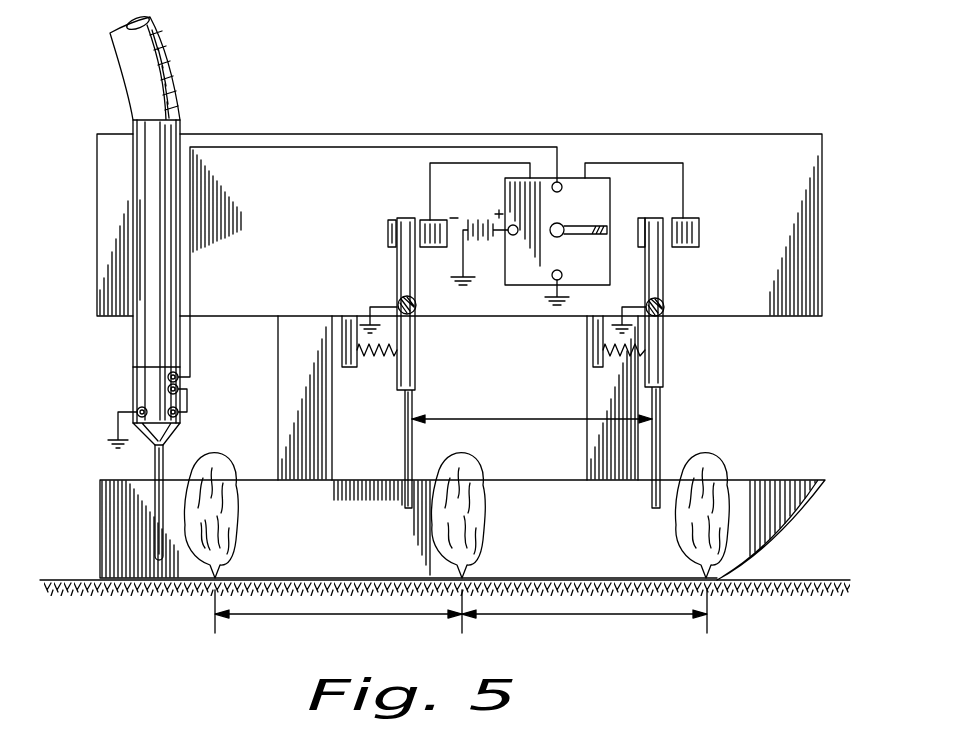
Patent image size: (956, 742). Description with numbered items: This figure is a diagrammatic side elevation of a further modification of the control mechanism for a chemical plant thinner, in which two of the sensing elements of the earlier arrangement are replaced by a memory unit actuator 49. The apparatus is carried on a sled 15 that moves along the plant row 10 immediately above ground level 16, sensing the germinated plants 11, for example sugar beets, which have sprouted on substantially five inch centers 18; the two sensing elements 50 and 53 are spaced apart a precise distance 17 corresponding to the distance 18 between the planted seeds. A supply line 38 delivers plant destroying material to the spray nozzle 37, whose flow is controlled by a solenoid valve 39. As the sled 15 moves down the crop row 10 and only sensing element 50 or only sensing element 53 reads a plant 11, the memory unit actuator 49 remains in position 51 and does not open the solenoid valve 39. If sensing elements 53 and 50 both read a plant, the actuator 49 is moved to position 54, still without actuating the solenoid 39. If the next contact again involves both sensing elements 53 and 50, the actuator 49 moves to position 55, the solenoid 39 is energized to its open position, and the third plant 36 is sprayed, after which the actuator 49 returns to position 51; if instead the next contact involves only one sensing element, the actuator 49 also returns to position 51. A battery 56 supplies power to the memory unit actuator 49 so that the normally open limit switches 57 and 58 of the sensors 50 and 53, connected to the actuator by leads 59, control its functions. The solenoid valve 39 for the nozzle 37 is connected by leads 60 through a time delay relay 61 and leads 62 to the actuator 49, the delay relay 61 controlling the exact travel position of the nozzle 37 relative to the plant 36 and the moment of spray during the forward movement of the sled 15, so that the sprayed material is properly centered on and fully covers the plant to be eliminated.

The plant row 10 is at (800, 580).
The plants 11 is at (742, 460).
The sled 15 is at (800, 133).
The ground level 16 is at (78, 580).
The distance between sensing elements 17 is at (558, 420).
The distance between planted seeds 18 is at (585, 628).
The third plant 36 is at (238, 532).
The spray nozzle 37 is at (155, 469).
The supply line 38 is at (177, 83).
The solenoid valve 39 is at (178, 426).
The memory unit actuator 49 is at (600, 286).
The sensing element 50 is at (661, 446).
The first position 51 is at (562, 190).
The sensing element 53 is at (413, 446).
The second position 54 is at (599, 237).
The third position 55 is at (572, 264).
The battery 56 is at (496, 216).
The limit switch 57 is at (422, 220).
The limit switch 58 is at (700, 222).
The leads 59 is at (698, 176).
The leads 60 is at (187, 402).
The time delay relay 61 is at (136, 384).
The leads 62 is at (191, 360).